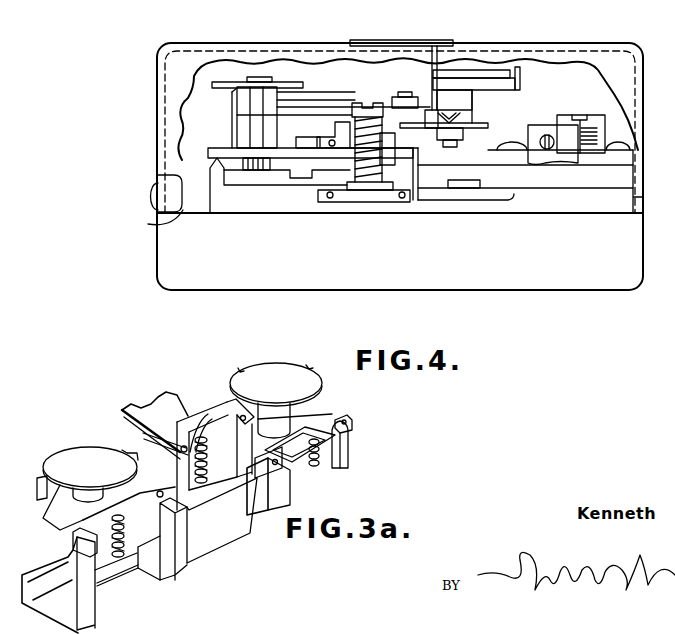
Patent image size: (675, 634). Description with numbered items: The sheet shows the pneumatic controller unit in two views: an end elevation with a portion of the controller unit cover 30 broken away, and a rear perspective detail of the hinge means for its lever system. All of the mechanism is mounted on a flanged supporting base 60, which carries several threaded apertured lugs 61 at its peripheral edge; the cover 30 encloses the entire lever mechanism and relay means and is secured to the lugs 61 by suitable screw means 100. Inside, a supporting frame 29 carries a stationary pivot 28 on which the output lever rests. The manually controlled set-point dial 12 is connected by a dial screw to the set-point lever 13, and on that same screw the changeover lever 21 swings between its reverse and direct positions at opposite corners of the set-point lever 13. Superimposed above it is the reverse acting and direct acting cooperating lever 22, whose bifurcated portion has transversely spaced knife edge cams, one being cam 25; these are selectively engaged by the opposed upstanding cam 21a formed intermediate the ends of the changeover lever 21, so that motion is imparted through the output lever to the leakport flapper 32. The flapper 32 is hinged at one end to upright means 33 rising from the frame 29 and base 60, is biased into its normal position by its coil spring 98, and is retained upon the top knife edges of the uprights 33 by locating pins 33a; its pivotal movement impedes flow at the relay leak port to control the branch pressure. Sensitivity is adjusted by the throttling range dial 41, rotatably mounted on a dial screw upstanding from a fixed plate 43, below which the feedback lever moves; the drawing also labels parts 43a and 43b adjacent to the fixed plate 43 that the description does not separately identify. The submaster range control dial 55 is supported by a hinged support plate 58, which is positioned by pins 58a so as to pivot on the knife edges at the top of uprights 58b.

In FIG. 4, the set-point dial 12 is at (486, 72).
In FIG. 4, the set-point lever 13 is at (470, 130).
In FIG. 4, the changeover lever 21 is at (506, 86).
In FIG. 4, the upstanding cam 21a is at (486, 124).
In FIG. 4, the reverse acting and direct acting cooperating lever 22 is at (432, 70).
In FIG. 4, the knife edge cam 25 is at (465, 112).
In FIG. 4, the stationary pivot 28 is at (316, 100).
In FIG. 4, the supporting frame 29 is at (233, 126).
In FIG. 3A, the supporting frame 29 is at (193, 527).
In FIG. 4, the controller unit cover 30 is at (621, 47).
In FIG. 4, the leakport flapper 32 is at (331, 86).
In FIG. 3A, the leakport flapper 32 is at (164, 402).
In FIG. 4, the uprights 33 is at (232, 95).
In FIG. 3A, the uprights 33 is at (190, 485).
In FIG. 3A, the locating pins 33a is at (180, 440).
In FIG. 3A, the throttling range dial 41 is at (78, 457).
In FIG. 3A, the fixed plate 43 is at (70, 513).
In FIG. 3A, the bracket tab 43a is at (72, 542).
In FIG. 3A, the spring 43b is at (167, 548).
In FIG. 3A, the submaster range control dial 55 is at (283, 373).
In FIG. 4, the hinged support plate 58 is at (216, 153).
In FIG. 3A, the hinged support plate 58 is at (308, 417).
In FIG. 3A, the pins 58a is at (350, 423).
In FIG. 4, the uprights 58b is at (218, 175).
In FIG. 3A, the uprights 58b is at (286, 482).
In FIG. 4, the flanged supporting base 60 is at (154, 222).
In FIG. 4, the threaded apertured lugs 61 is at (167, 186).
In FIG. 3A, the coil spring 98 is at (201, 437).
In FIG. 4, the screw means 100 is at (153, 196).